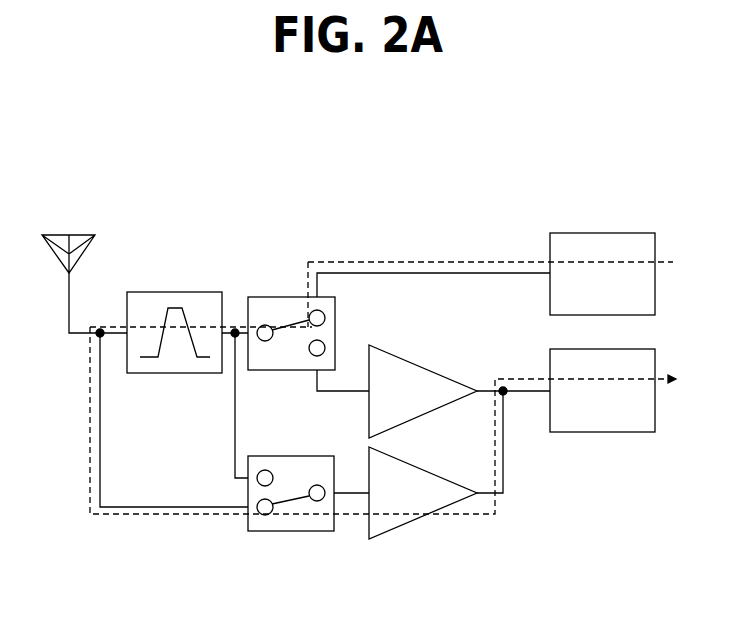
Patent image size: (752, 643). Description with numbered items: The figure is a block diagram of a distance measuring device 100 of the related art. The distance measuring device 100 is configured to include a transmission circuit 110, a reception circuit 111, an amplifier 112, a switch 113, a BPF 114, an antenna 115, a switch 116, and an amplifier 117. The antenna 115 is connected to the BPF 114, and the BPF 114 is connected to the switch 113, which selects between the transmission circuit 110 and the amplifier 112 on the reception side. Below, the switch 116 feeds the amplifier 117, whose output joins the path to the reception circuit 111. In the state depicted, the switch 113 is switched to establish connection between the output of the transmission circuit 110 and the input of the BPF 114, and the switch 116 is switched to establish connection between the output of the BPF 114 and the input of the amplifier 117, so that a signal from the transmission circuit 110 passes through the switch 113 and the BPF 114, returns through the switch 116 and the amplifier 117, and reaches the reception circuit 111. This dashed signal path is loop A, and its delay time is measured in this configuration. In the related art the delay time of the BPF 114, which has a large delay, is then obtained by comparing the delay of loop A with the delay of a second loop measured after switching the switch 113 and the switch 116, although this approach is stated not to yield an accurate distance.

The distance measuring device 100 is at (402, 181).
The transmission circuit 110 is at (658, 253).
The reception circuit 111 is at (658, 369).
The amplifier 112 is at (427, 370).
The switch 113 is at (295, 296).
The BPF 114 is at (177, 291).
The antenna 115 is at (85, 234).
The switch 116 is at (293, 455).
The amplifier 117 is at (442, 478).
The loop A is at (514, 262).